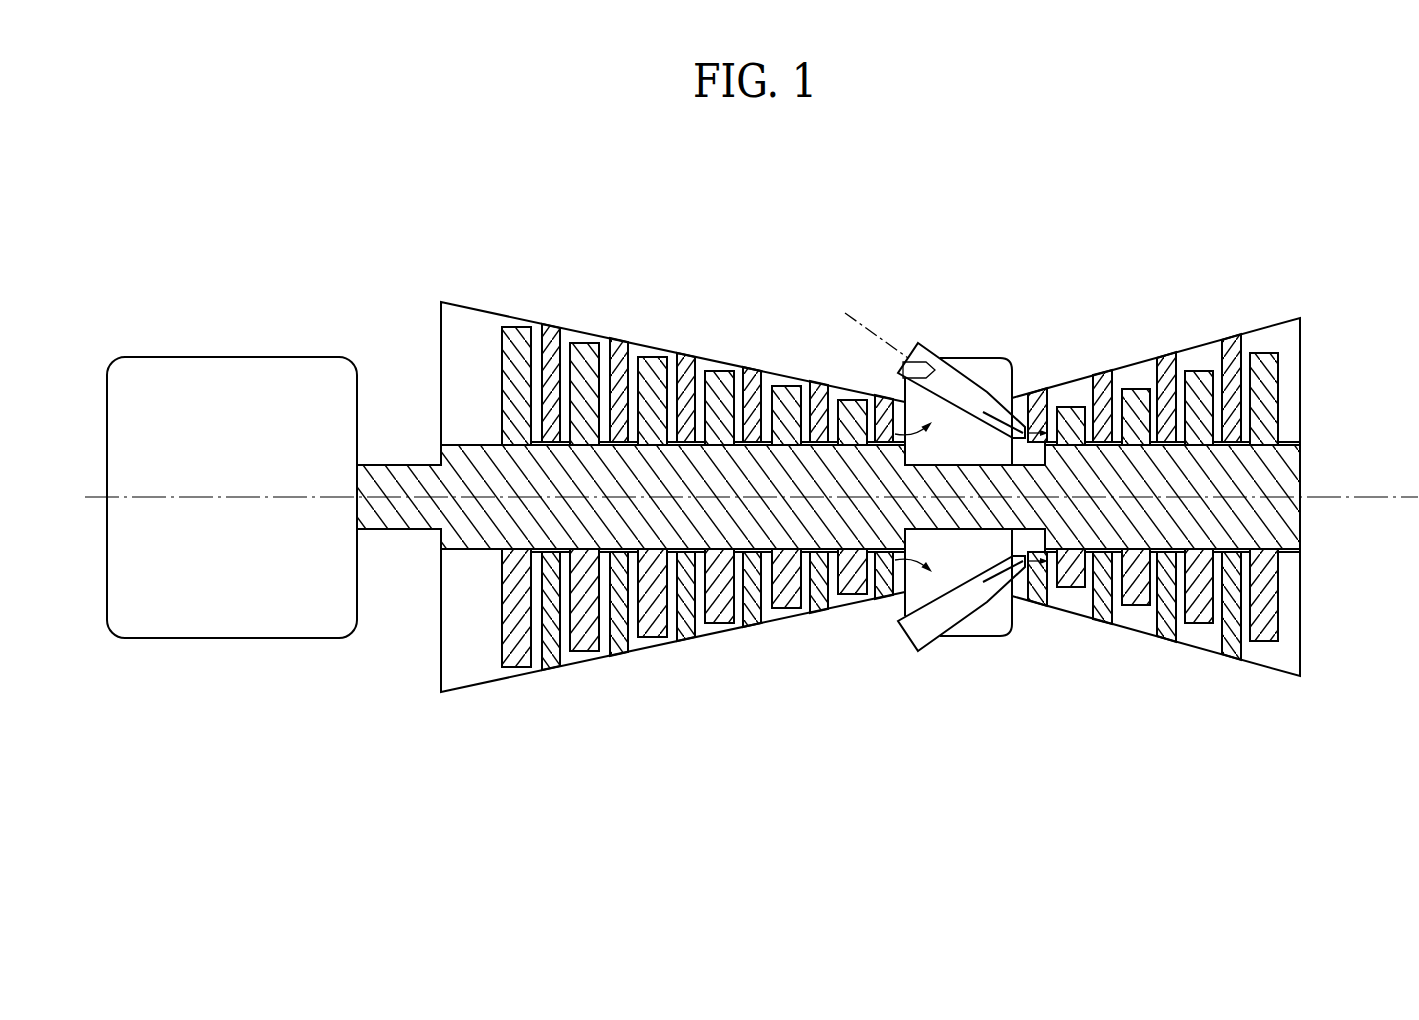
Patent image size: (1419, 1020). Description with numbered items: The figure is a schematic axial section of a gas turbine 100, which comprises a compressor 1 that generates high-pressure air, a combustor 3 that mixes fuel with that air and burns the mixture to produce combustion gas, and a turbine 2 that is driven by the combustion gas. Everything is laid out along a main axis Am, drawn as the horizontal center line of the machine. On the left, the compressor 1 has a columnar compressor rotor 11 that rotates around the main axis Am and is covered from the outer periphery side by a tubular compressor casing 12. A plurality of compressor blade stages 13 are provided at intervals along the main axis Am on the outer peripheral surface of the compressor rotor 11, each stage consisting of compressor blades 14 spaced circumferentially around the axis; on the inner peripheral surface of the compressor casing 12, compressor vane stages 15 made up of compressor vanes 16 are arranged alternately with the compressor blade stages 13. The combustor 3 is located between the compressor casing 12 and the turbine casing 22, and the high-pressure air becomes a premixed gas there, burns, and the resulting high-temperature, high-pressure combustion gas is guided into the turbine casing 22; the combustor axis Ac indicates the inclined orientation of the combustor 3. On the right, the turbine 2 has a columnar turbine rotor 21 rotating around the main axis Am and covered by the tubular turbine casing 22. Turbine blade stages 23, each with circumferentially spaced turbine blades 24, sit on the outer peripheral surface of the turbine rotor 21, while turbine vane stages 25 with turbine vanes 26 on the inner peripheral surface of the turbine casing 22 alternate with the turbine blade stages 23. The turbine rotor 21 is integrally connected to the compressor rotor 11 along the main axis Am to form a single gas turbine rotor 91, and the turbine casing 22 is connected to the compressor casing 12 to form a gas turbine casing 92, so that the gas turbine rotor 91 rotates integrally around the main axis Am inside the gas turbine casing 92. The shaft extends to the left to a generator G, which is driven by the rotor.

The gas turbine 100 is at (1236, 207).
The compressor 1 is at (698, 487).
The turbine 2 is at (1168, 482).
The combustor 3 is at (993, 334).
The compressor rotor 11 is at (686, 570).
The compressor casing 12 is at (657, 347).
The compressor blade stages 13 is at (515, 657).
The compressor blades 14 is at (672, 570).
The compressor vane stages 15 is at (620, 643).
The compressor vanes 16 is at (718, 553).
The turbine rotor 21 is at (1122, 581).
The turbine casing 22 is at (1124, 366).
The turbine blade stages 23 is at (1197, 615).
The turbine blades 24 is at (1174, 581).
The turbine vane stages 25 is at (1103, 615).
The turbine vanes 26 is at (1164, 548).
The gas turbine rotor 91 is at (988, 735).
The gas turbine casing 92 is at (870, 471).
The generator G is at (240, 357).
The combustor axis Ac is at (877, 338).
The main axis Am is at (1395, 496).